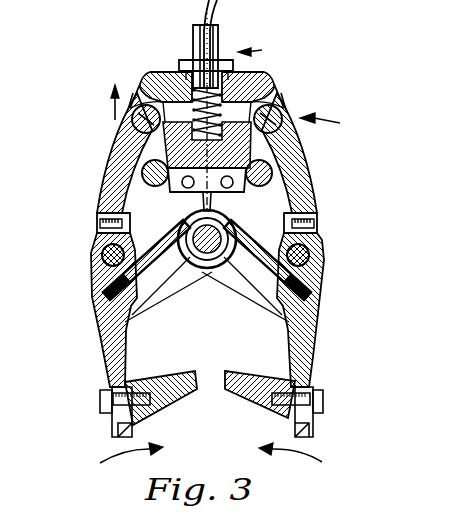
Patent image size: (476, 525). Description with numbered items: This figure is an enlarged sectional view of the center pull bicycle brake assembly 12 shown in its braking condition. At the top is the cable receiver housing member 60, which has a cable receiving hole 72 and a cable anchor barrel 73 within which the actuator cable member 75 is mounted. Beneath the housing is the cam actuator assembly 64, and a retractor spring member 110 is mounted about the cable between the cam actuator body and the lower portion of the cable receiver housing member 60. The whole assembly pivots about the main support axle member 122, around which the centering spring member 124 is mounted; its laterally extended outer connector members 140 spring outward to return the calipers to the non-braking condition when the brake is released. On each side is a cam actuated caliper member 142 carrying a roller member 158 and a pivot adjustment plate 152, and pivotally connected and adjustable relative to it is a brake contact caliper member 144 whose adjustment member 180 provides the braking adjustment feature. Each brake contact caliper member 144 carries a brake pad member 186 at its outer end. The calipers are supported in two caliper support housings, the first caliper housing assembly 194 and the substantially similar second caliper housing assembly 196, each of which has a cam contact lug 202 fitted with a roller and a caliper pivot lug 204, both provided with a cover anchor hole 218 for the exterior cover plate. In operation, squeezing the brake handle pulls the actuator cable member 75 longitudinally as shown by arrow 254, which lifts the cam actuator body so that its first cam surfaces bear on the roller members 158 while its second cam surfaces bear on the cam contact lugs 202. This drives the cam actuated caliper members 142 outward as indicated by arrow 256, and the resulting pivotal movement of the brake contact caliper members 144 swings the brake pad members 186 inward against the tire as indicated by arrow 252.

The center pull bicycle brake assembly 12 is at (340, 123).
The cable receiver housing member 60 is at (262, 74).
The cam actuator assembly 64 is at (150, 80).
The cable receiving hole 72 is at (233, 63).
The cable anchor barrel 73 is at (218, 30).
The actuator cable member 75 is at (218, 4).
The retractor spring member 110 is at (178, 64).
The main support axle member 122 is at (100, 318).
The centering spring member 124 is at (297, 378).
The outer connector members 140 is at (102, 310).
The cam actuated caliper member 142 is at (103, 178).
The brake contact caliper member 144 is at (97, 332).
The pivot adjustment plate 152 is at (100, 197).
The roller member 158 is at (128, 113).
The adjustment member 180 is at (97, 225).
The brake pad member 186 is at (120, 385).
The first caliper housing assembly 194 is at (138, 98).
The second caliper housing assembly 196 is at (278, 97).
The cam contact lug 202 is at (125, 118).
The caliper pivot lug 204 is at (90, 272).
The cover anchor hole 218 is at (118, 164).
The arrow 252 is at (117, 457).
The arrow 254 is at (103, 88).
The arrow 256 is at (262, 50).